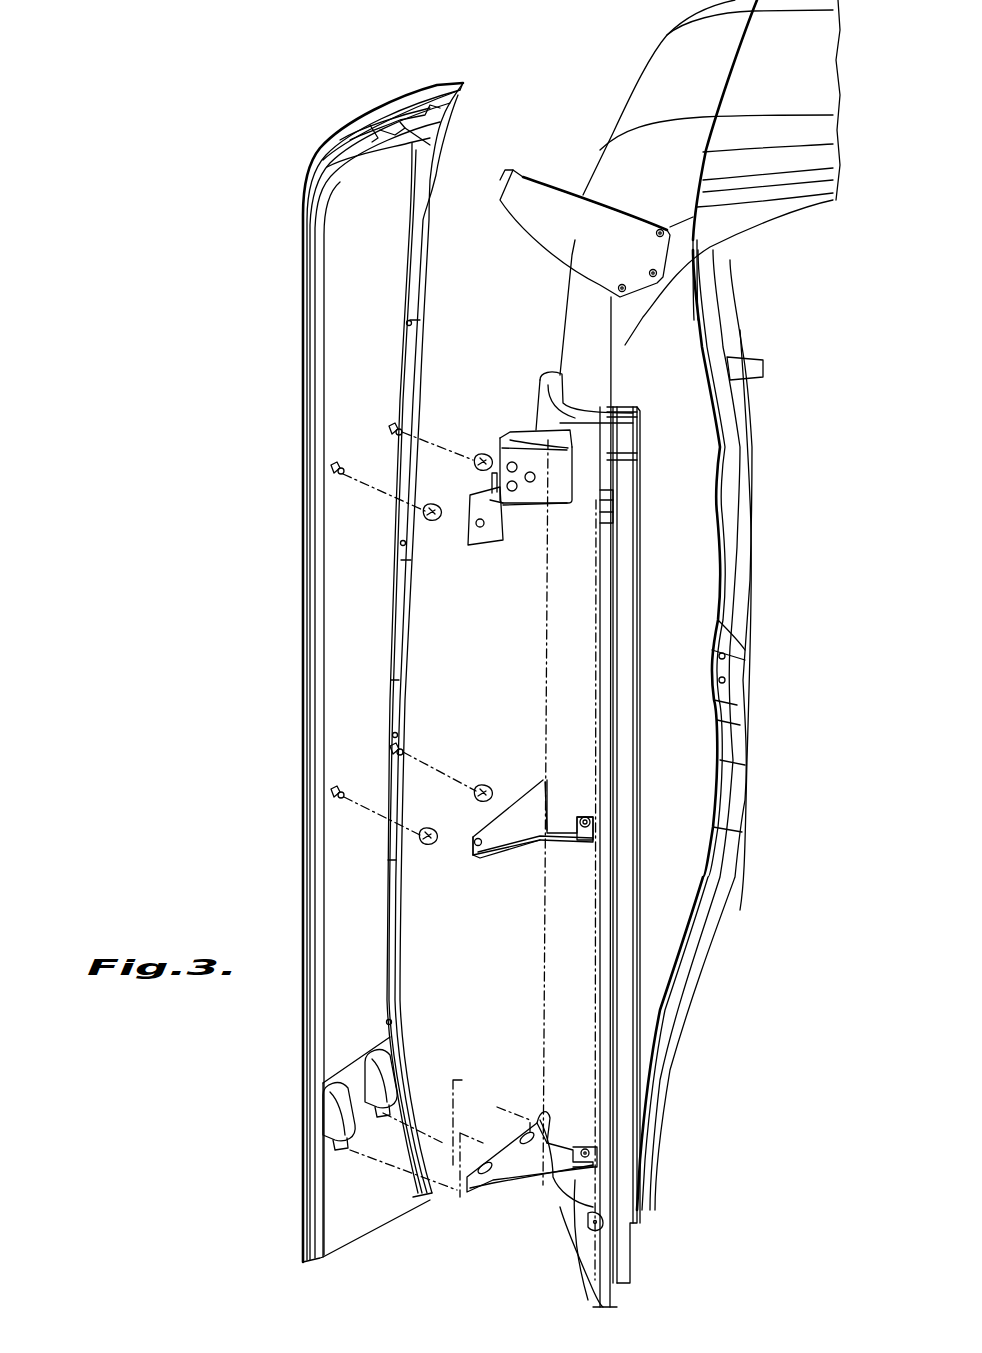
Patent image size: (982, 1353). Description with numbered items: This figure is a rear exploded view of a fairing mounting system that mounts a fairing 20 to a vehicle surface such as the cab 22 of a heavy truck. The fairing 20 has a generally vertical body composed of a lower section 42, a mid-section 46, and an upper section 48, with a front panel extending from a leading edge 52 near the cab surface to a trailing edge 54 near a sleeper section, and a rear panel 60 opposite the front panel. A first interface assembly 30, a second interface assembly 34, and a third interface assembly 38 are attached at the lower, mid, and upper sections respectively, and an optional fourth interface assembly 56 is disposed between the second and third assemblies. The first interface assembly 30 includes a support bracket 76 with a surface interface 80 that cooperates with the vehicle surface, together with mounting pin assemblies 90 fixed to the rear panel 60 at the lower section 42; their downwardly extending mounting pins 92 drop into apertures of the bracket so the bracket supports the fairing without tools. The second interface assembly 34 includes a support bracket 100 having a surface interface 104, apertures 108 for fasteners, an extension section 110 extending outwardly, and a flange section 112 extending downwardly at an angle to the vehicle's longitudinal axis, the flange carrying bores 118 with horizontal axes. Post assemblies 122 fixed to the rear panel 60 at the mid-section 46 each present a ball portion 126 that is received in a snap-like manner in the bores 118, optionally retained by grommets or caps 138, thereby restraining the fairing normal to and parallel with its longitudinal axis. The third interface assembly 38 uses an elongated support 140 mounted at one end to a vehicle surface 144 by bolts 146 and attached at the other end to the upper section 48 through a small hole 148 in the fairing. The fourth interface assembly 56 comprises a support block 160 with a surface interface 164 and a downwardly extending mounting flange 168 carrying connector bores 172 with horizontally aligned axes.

The fairing 20 is at (300, 355).
The cab 22 is at (575, 1065).
The first interface assembly 30 is at (493, 1094).
The second interface assembly 34 is at (378, 775).
The third interface assembly 38 is at (510, 95).
The lower section 42 is at (315, 1190).
The mid-section 46 is at (350, 626).
The upper section 48 is at (340, 196).
The leading edge 52 is at (318, 575).
The trailing edge 54 is at (402, 942).
The fourth interface assembly 56 is at (448, 478).
The rear panel 60 is at (340, 722).
The support bracket 76 is at (528, 1180).
The surface interface 80 is at (545, 1125).
The mounting pin assemblies 90 is at (318, 1105).
The mounting pins 92 is at (340, 1145).
The support bracket 100 is at (520, 810).
The surface interface 104 is at (548, 795).
The apertures 108 is at (582, 827).
The extension section 110 is at (510, 848).
The flange section 112 is at (480, 860).
The bores 118 is at (455, 830).
The post assemblies 122 is at (328, 483).
The ball portion 126 is at (330, 482).
The grommets or caps 138 is at (482, 455).
The elongated support 140 is at (558, 240).
The surface 144 is at (575, 240).
The bolts 146 is at (657, 228).
The hole 148 is at (340, 140).
The support block 160 is at (568, 510).
The surface interface 164 is at (540, 380).
The mounting flange 168 is at (493, 540).
The bores 172 is at (485, 528).